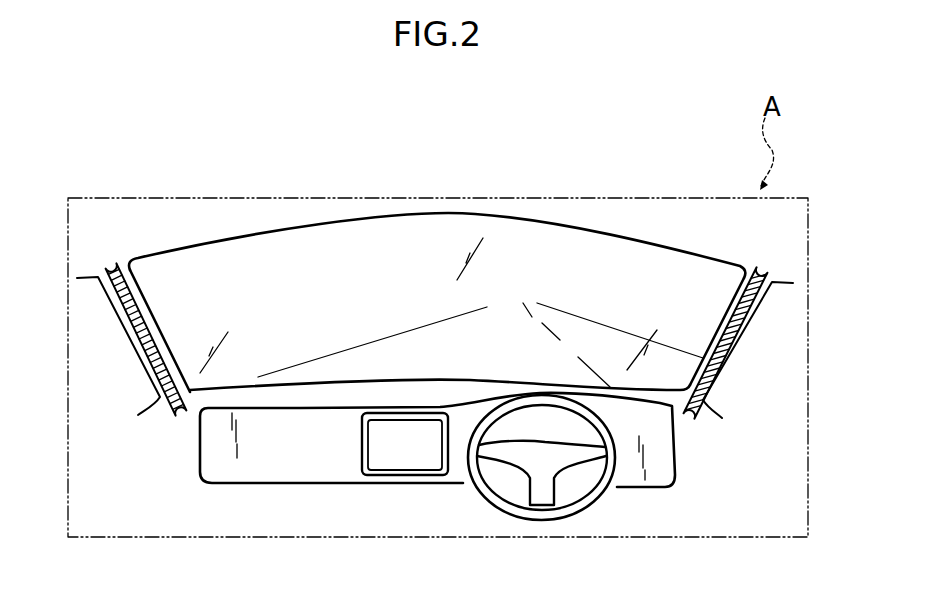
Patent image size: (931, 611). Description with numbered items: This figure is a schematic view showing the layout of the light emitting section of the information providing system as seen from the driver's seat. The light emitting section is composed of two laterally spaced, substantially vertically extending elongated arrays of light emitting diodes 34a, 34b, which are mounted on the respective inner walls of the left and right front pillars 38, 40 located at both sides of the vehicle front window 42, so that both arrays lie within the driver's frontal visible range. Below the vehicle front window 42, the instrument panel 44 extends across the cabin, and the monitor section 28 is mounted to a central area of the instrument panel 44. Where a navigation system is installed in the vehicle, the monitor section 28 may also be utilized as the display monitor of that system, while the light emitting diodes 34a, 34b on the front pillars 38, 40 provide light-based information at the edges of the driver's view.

The monitor section 28 is at (400, 460).
The elongated array of light emitting diodes 34a is at (163, 337).
The elongated array of light emitting diodes 34b is at (720, 326).
The left front pillar 38 is at (143, 298).
The right front pillar 40 is at (733, 300).
The vehicle front window 42 is at (380, 237).
The instrument panel 44 is at (285, 468).